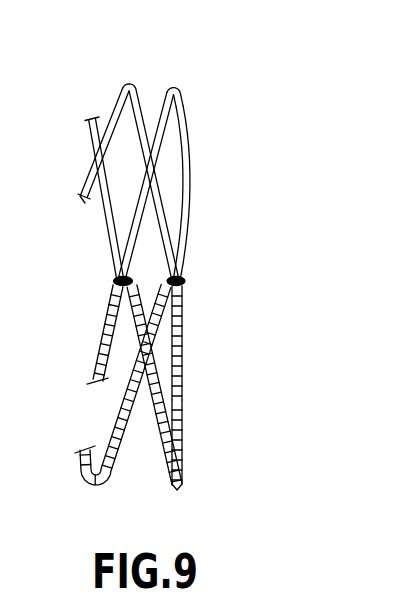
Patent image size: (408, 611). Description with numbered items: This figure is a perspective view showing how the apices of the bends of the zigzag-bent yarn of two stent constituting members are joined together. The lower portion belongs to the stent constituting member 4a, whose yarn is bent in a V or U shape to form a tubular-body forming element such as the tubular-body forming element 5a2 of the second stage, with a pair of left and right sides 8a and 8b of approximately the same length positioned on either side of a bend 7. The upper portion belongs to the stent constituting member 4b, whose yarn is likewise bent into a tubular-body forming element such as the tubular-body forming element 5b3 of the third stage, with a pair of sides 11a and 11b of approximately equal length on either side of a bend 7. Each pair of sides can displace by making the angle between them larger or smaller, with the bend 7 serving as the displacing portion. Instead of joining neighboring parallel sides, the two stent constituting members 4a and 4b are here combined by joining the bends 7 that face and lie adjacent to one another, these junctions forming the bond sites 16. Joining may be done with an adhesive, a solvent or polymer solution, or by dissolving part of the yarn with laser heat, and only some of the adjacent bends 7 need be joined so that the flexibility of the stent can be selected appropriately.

The bend 7 is at (130, 79).
The side 11a is at (143, 140).
The side 11b is at (113, 115).
The stent constituting member 4b is at (190, 102).
The tubular-body forming element of the third stage 5b3 is at (188, 200).
The bond site 16 is at (115, 282).
The side 8a is at (183, 337).
The side 8b is at (100, 333).
The stent constituting member 4a is at (182, 375).
The tubular-body forming element of the second stage 5a2 is at (183, 467).